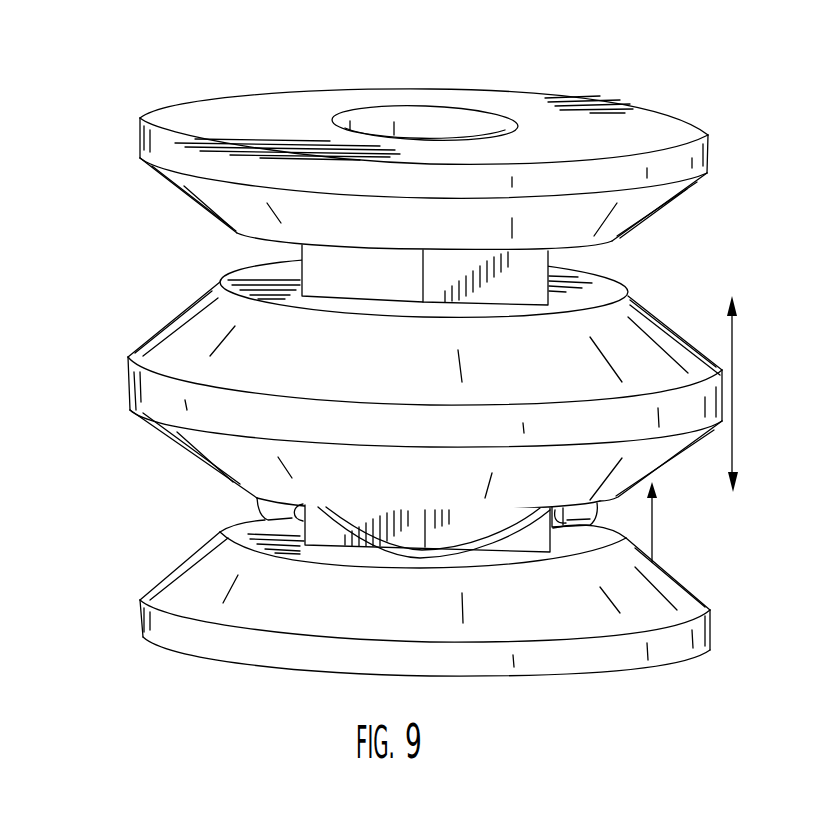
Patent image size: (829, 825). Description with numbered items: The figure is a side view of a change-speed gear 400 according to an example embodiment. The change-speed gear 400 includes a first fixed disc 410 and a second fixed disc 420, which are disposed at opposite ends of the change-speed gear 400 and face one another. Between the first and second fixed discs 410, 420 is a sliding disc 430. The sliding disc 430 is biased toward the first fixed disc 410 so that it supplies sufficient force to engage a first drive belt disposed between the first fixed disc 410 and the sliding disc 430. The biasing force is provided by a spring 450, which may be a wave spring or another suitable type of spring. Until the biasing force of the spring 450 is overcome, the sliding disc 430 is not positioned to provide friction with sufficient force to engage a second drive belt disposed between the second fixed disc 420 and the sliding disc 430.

The change-speed gear 400 is at (121, 42).
The first fixed disc 410 is at (189, 151).
The second fixed disc 420 is at (191, 628).
The sliding disc 430 is at (165, 360).
The spring 450 is at (270, 521).